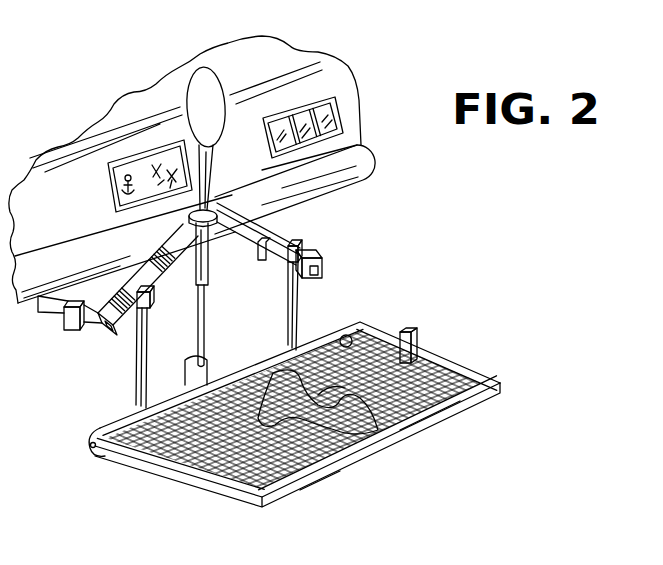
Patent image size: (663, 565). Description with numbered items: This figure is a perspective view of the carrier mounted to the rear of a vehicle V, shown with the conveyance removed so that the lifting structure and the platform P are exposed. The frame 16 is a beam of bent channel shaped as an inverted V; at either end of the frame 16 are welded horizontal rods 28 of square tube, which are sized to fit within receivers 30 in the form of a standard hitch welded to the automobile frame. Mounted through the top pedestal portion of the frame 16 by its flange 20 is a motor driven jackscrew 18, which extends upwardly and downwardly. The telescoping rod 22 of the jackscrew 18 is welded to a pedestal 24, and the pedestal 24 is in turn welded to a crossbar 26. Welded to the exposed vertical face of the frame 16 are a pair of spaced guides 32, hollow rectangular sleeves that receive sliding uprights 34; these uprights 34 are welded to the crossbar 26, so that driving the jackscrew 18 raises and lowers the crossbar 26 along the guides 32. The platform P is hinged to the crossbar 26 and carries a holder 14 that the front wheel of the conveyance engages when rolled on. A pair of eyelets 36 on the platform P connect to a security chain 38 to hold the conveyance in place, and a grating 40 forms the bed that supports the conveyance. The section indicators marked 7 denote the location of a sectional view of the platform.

The vehicle V is at (322, 78).
The platform P is at (297, 425).
The holder 14 is at (420, 338).
The frame 16 is at (115, 222).
The motor driven jackscrew 18 is at (217, 50).
The flange 20 is at (296, 202).
The telescoping rod 22 is at (206, 302).
The pedestal 24 is at (210, 360).
The crossbar 26 is at (105, 420).
The horizontal rods 28 is at (90, 336).
The receivers 30 is at (54, 311).
The guides 32 is at (151, 298).
The sliding uprights 34 is at (148, 345).
The eyelets 36 is at (403, 430).
The security chain 38 is at (337, 463).
The grating 40 is at (318, 465).
The section line 7 is at (186, 491).